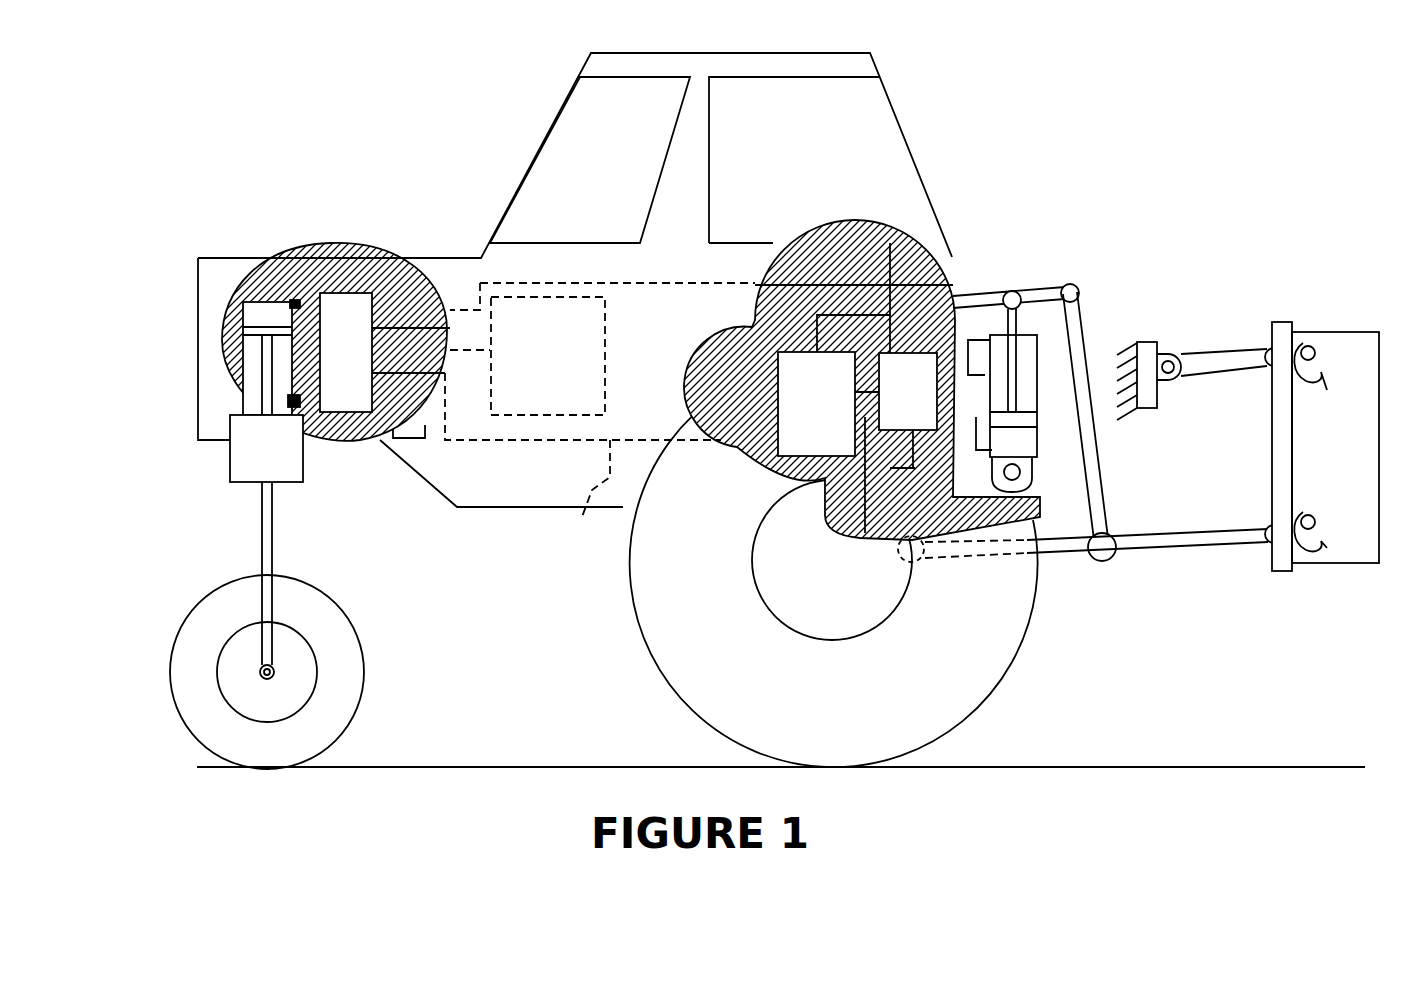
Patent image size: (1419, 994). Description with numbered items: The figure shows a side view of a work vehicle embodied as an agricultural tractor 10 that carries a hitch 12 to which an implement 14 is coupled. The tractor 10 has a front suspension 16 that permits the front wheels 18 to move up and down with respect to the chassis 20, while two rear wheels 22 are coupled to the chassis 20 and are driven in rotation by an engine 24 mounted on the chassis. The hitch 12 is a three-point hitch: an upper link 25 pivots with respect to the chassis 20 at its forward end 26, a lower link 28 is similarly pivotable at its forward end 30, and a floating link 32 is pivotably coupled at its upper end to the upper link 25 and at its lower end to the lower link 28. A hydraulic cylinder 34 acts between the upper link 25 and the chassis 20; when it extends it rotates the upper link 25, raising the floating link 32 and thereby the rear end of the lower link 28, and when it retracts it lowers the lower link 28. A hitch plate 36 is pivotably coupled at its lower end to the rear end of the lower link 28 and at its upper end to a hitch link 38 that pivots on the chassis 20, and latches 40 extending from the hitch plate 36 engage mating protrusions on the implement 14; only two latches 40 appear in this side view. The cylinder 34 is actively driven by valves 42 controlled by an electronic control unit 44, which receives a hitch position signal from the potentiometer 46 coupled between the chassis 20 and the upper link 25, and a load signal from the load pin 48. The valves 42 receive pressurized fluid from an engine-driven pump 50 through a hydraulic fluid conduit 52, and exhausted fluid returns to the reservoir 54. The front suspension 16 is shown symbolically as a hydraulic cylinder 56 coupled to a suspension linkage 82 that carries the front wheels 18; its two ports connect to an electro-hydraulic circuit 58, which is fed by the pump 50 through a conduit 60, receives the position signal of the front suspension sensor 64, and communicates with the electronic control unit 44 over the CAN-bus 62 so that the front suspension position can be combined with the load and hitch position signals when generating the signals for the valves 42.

The agricultural tractor 10 is at (418, 146).
The hitch 12 is at (1134, 160).
The implement 14 is at (1325, 458).
The front suspension 16 is at (416, 549).
The front wheels 18 is at (325, 686).
The chassis 20 is at (1141, 338).
The rear wheels 22 is at (675, 568).
The engine 24 is at (533, 369).
The upper link 25 is at (1038, 285).
The forward end of upper link 26 is at (923, 225).
The lower link 28 is at (1190, 552).
The forward end of lower link 30 is at (913, 563).
The floating link 32 is at (1105, 483).
The hydraulic cylinder 34 is at (1040, 405).
The hitch plate 36 is at (1272, 437).
The hitch link 38 is at (1207, 350).
The latches 40 is at (1318, 384).
The valves 42 is at (893, 405).
The electronic control unit 44 is at (801, 431).
The potentiometer 46 is at (900, 215).
The load pin 48 is at (893, 548).
The pump 50 is at (455, 343).
The hydraulic fluid conduit 52 is at (660, 283).
The hydraulic fluid reservoir 54 is at (414, 440).
The hydraulic cylinder 56 is at (225, 345).
The electro-hydraulic circuit 58 is at (331, 363).
The conduit 60 is at (422, 303).
The CAN-bus 62 is at (578, 520).
The front suspension sensor 64 is at (300, 420).
The suspension linkage 82 is at (251, 460).